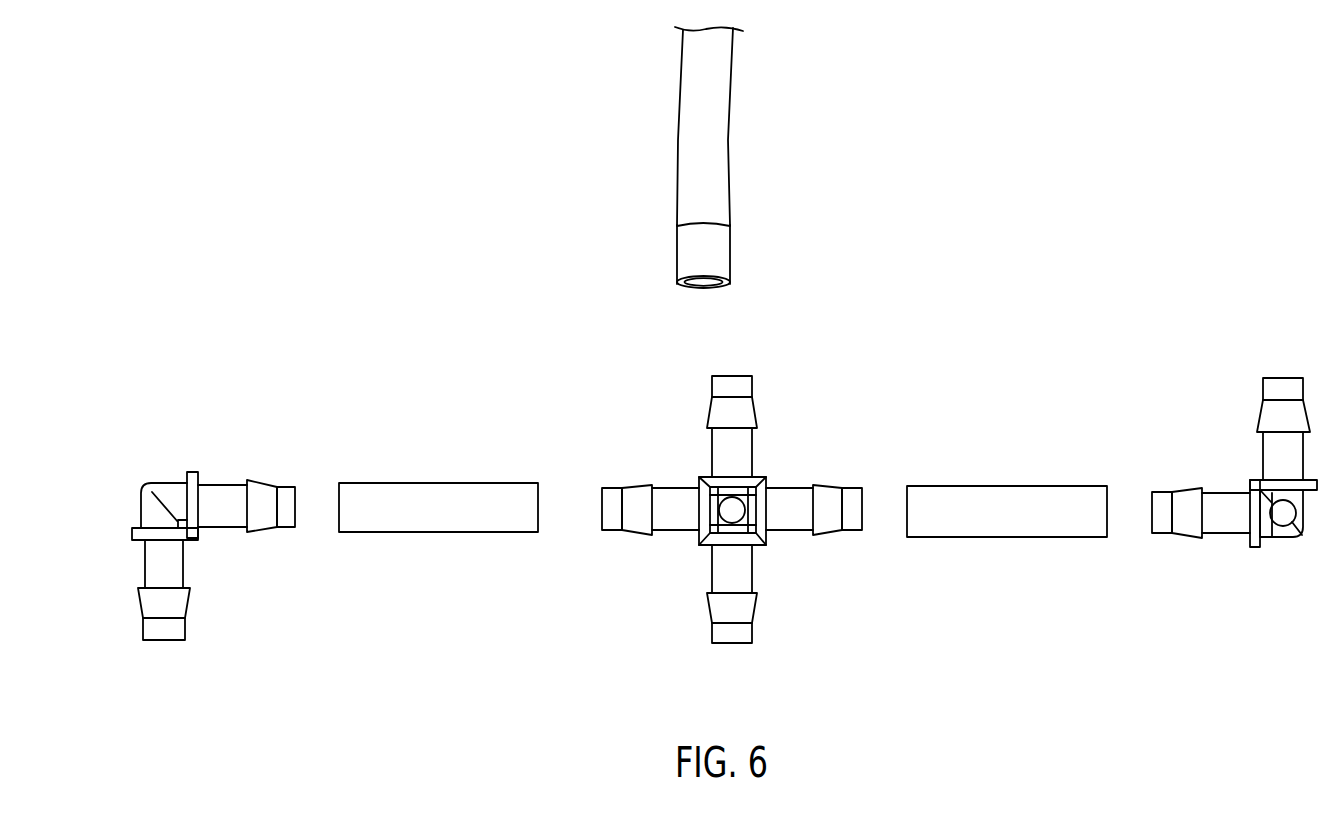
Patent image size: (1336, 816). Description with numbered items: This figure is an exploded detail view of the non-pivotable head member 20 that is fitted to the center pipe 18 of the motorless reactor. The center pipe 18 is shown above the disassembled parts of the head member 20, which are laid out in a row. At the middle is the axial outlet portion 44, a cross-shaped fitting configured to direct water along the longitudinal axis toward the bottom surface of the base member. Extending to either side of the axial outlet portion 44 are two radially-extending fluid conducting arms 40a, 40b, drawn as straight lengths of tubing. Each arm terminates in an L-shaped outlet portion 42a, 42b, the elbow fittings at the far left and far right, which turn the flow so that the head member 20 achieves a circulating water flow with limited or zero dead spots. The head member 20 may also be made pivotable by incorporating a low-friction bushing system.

The center pipe 18 is at (730, 123).
The non-pivotable head member 20 is at (1021, 207).
The radially-extending fluid conducting arm 40a is at (599, 551).
The radially-extending fluid conducting arm 40b is at (893, 563).
The L-shaped outlet portion 42a is at (242, 592).
The L-shaped outlet portion 42b is at (1234, 589).
The axial outlet portion 44 is at (791, 631).